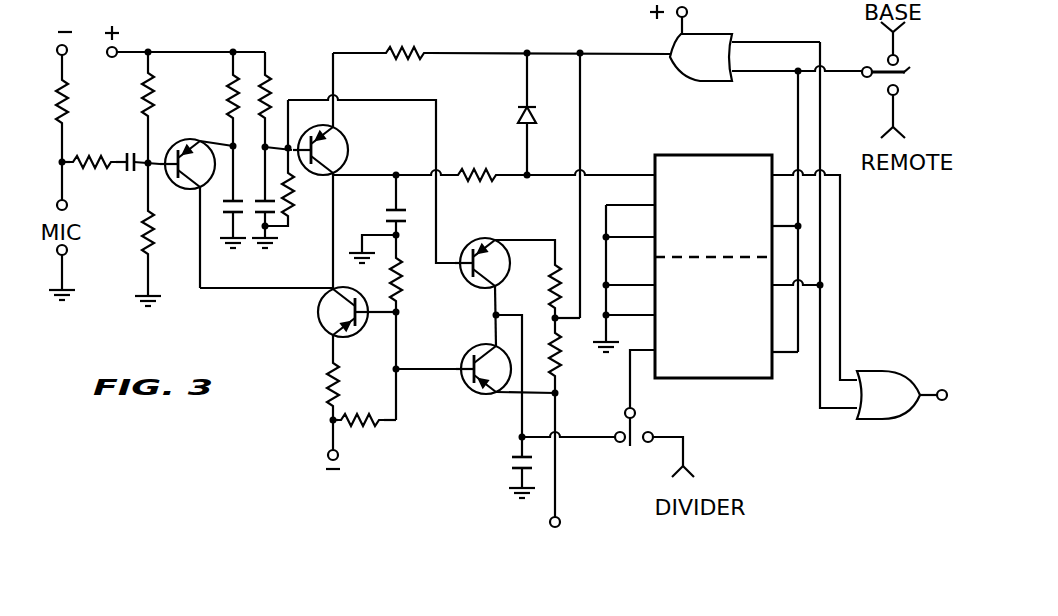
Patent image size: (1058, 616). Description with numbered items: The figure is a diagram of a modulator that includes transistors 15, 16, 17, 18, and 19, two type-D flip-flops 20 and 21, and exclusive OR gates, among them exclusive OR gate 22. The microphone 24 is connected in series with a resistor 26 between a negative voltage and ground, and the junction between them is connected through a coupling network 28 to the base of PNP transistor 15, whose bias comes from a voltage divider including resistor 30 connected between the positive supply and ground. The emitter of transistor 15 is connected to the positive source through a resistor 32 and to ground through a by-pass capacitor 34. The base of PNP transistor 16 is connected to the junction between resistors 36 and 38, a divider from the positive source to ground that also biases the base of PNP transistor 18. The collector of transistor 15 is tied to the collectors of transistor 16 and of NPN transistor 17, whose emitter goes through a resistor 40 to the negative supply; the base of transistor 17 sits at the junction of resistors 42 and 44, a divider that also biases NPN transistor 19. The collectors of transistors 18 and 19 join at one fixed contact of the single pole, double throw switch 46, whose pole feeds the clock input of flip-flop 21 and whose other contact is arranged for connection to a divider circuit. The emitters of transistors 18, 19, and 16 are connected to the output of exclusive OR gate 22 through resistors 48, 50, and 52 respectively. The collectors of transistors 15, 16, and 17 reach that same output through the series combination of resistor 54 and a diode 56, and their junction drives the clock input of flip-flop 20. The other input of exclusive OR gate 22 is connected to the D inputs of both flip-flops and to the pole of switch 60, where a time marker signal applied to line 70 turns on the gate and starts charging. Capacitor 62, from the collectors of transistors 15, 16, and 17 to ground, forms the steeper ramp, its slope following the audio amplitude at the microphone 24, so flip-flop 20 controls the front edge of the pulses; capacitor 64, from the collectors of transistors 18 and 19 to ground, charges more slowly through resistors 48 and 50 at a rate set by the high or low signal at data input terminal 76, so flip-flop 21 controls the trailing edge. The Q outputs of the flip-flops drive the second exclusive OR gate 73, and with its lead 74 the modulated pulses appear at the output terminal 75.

The PNP transistor 15 is at (190, 190).
The PNP transistor 16 is at (344, 143).
The NPN transistor 17 is at (318, 317).
The PNP transistor 18 is at (488, 239).
The NPN transistor 19 is at (478, 391).
The type-D flip-flop 20 is at (700, 155).
The type-D flip-flop 21 is at (714, 380).
The exclusive OR gate 22 is at (708, 33).
The microphone 24 is at (68, 205).
The resistor 26 is at (71, 98).
The coupling network 28 is at (125, 148).
The resistor 30 is at (145, 246).
The resistor 32 is at (228, 100).
The by-pass capacitor 34 is at (231, 201).
The resistor 36 is at (272, 91).
The resistor 38 is at (291, 213).
The resistor 40 is at (326, 384).
The resistor 42 is at (364, 425).
The resistor 44 is at (401, 277).
The single pole, double throw switch 46 is at (619, 444).
The resistor 48 is at (552, 283).
The resistor 50 is at (562, 369).
The resistor 52 is at (402, 50).
The resistor 54 is at (473, 172).
The diode 56 is at (525, 107).
The single pole, double throw switch 60 is at (915, 63).
The capacitor 62 is at (394, 209).
The capacitor 64 is at (519, 464).
The line 70 is at (844, 68).
The OR gate 73 is at (880, 421).
The conductor line 74 is at (815, 404).
The output terminal 75 is at (941, 389).
The data input terminal 76 is at (560, 526).